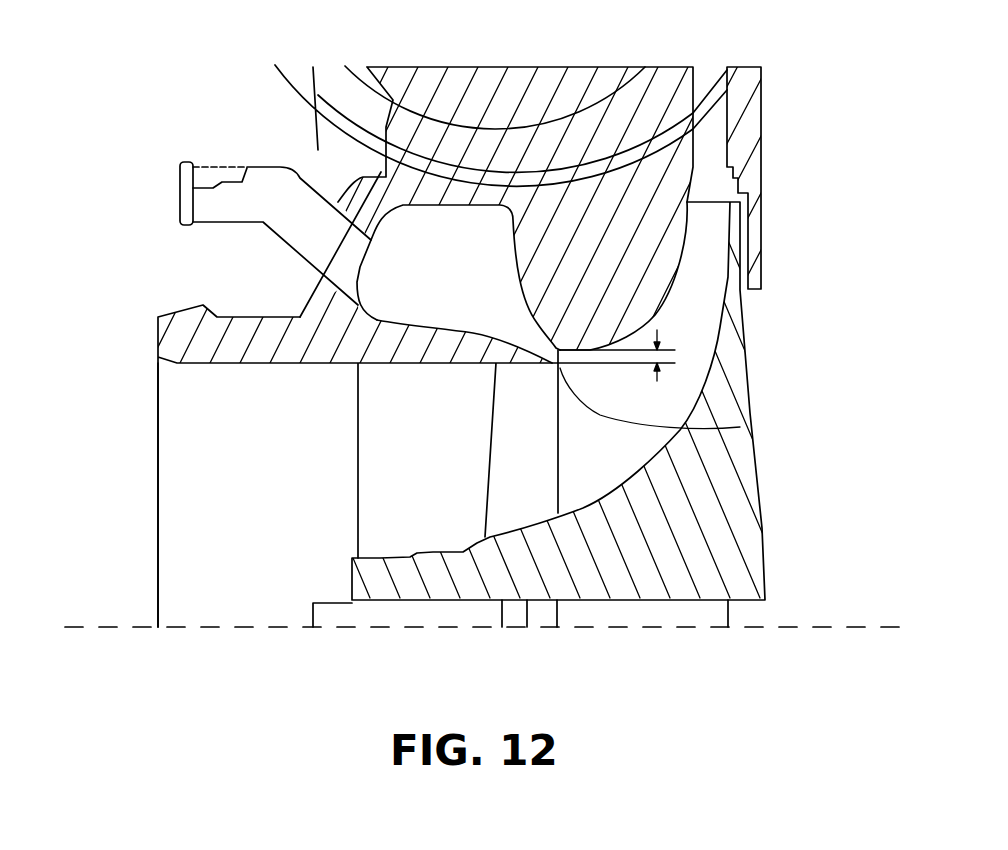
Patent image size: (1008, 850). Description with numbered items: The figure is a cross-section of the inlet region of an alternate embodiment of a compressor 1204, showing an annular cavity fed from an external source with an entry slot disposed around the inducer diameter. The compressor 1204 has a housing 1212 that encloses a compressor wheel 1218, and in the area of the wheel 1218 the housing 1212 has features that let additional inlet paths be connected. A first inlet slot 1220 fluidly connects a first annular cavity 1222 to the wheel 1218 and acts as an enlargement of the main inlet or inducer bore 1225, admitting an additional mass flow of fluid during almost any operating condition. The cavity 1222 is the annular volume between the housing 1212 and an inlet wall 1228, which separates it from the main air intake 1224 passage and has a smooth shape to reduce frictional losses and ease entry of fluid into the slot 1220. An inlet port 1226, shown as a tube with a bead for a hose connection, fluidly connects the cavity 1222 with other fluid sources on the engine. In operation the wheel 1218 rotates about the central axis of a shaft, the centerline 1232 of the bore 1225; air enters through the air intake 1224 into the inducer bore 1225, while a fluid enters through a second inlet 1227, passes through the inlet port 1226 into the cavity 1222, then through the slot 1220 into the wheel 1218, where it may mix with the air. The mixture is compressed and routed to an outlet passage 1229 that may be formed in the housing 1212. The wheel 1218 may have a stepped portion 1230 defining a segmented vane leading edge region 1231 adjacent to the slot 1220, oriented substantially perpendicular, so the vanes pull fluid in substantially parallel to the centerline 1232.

The compressor 1204 is at (194, 669).
The housing 1212 is at (606, 160).
The compressor wheel 1218 is at (710, 550).
The first inlet slot 1220 is at (740, 427).
The first annular cavity 1222 is at (470, 280).
The main air intake 1224 is at (154, 500).
The inducer bore 1225 is at (288, 504).
The inlet port 1226 is at (290, 182).
The second inlet 1227 is at (176, 190).
The inlet wall 1228 is at (443, 345).
The outlet passage 1229 is at (717, 160).
The stepped portion 1230 is at (568, 368).
The segmented vane leading edge region 1231 is at (657, 333).
The shaft centerline 1232 is at (780, 628).